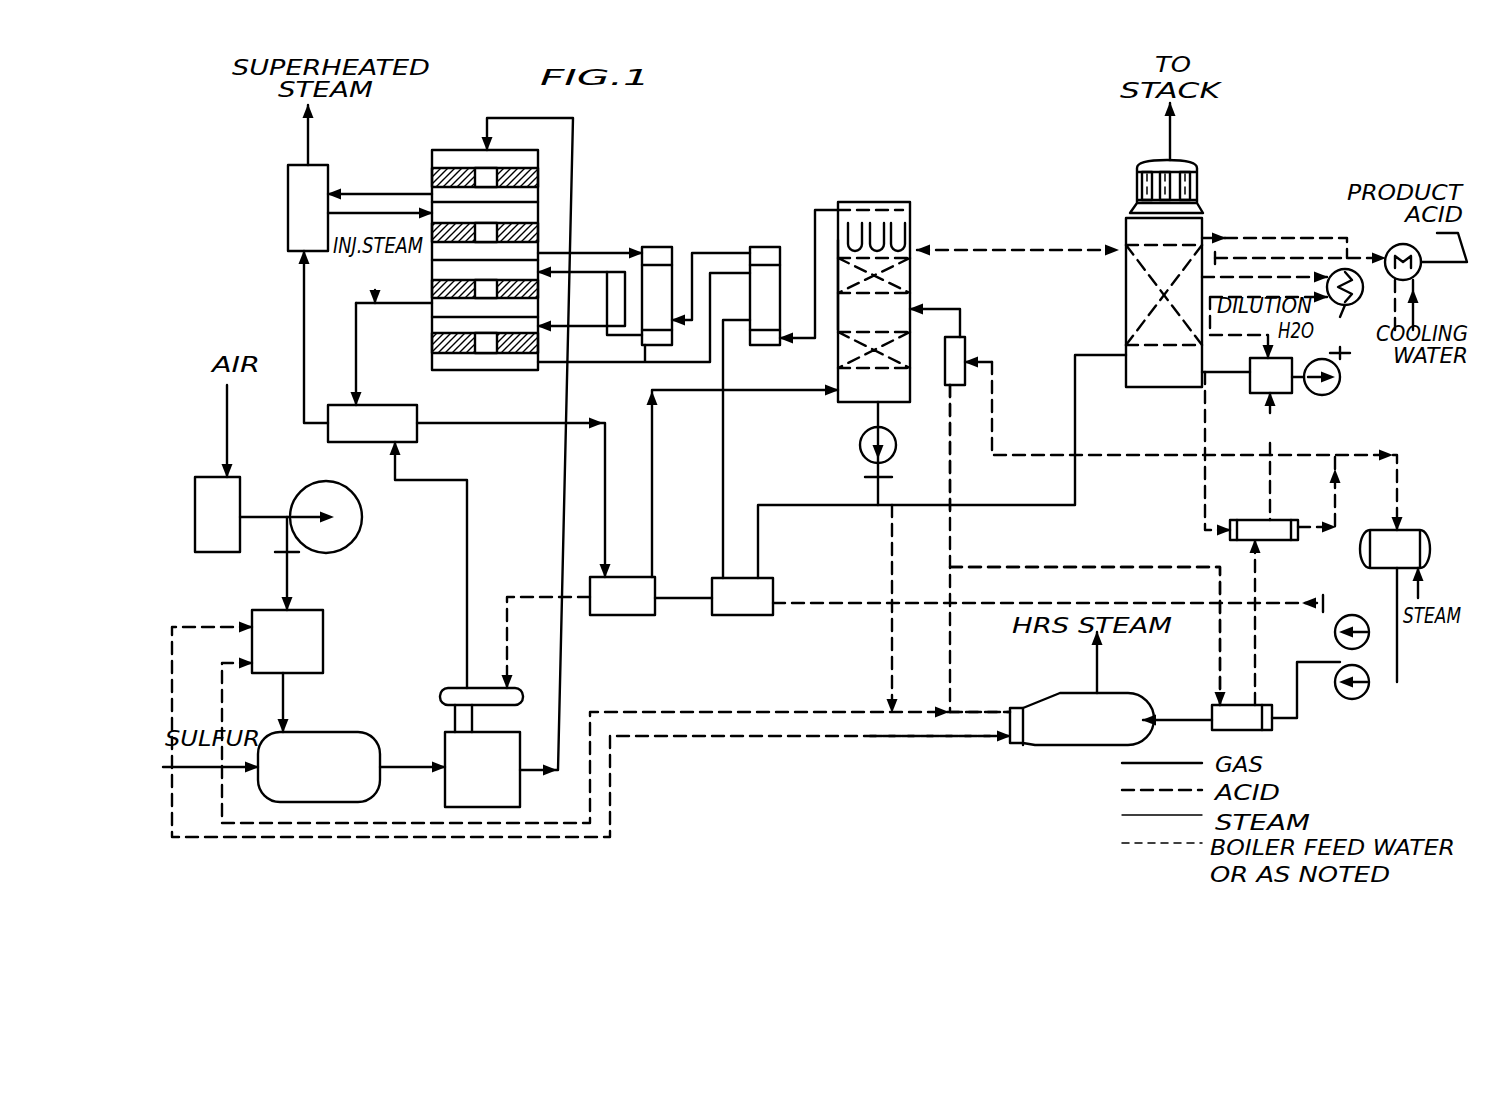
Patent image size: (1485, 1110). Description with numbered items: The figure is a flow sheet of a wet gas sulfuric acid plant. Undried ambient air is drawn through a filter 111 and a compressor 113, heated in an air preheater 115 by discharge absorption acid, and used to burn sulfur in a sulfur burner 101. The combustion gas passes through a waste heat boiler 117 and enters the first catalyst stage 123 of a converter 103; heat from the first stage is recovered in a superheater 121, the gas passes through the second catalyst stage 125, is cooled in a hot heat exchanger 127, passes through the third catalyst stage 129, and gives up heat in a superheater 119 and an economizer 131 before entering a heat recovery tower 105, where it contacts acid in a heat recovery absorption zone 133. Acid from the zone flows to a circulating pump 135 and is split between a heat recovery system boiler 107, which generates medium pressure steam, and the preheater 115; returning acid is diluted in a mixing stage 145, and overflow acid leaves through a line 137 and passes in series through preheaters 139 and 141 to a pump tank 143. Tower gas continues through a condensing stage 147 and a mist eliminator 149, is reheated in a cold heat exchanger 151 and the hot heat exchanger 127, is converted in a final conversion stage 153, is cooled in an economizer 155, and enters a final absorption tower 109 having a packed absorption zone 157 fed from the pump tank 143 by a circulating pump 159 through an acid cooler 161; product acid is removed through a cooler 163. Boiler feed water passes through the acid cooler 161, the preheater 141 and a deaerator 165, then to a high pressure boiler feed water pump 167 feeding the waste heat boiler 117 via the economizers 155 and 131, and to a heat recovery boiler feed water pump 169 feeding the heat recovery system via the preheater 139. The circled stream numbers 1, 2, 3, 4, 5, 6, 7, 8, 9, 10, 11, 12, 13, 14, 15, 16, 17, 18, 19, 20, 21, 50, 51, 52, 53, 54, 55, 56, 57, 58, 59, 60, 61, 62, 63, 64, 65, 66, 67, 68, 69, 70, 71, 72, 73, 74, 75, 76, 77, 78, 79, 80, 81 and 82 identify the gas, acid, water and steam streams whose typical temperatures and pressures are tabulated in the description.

The sulfur burner 101 is at (367, 734).
The converter 103 is at (460, 132).
The heat recovery absorption tower 105 is at (910, 209).
The heat recovery system boiler 107 is at (1085, 745).
The final absorption tower 109 is at (1126, 222).
The filter 111 is at (240, 477).
The compressor 113 is at (362, 517).
The air preheater 115 is at (323, 639).
The waste heat recovery unit 117 is at (496, 807).
The superheater 119 is at (417, 440).
The superheater 121 is at (288, 200).
The first catalyst stage 123 is at (538, 188).
The second catalyst stage 125 is at (538, 243).
The hot heat exchanger 127 is at (645, 348).
The third catalyst stage 129 is at (432, 298).
The economizer 131 is at (655, 615).
The heat recovery absorption zone 133 is at (855, 368).
The circulating pump 135 is at (865, 458).
The overflow acid line 137 is at (1108, 567).
The heat exchanger 139 is at (1272, 729).
The heat exchanger 141 is at (1280, 520).
The pump tank 143 is at (1255, 393).
The mixing stage 145 is at (960, 337).
The condensing stage 147 is at (836, 290).
The mist eliminator 149 is at (903, 210).
The cold heat exchanger 151 is at (765, 347).
The final conversion stage 153 is at (432, 350).
The economizer 155 is at (773, 615).
The packed absorption zone 157 is at (1126, 315).
The circulating pump 159 is at (1338, 386).
The acid cooler 161 is at (1353, 270).
The cooler 163 is at (1416, 281).
The deaerator 165 is at (1430, 545).
The high pressure boiler feed water pump 167 is at (1368, 641).
The heat recovery boiler feed water pump 169 is at (1368, 689).
The process stream 1 is at (227, 431).
The process stream 2 is at (265, 517).
The process stream 3 is at (287, 564).
The process stream 4 is at (283, 703).
The process stream 5 is at (413, 767).
The process stream 6 is at (528, 447).
The process stream 7 is at (379, 195).
The process stream 8 is at (380, 213).
The process stream 9 is at (590, 253).
The process stream 10 is at (617, 303).
The process stream 11 is at (394, 303).
The process stream 12 is at (355, 354).
The process stream 13 is at (514, 493).
The process stream 14 is at (738, 481).
The process stream 15 is at (808, 277).
The process stream 16 is at (710, 282).
The process stream 17 is at (581, 304).
The process stream 18 is at (644, 325).
The process stream 19 is at (729, 449).
The process stream 20 is at (942, 466).
The process stream 21 is at (1170, 131).
The process stream 50 is at (211, 767).
The process stream 51 is at (1265, 277).
The process stream 52 is at (1210, 454).
The process stream 53 is at (1324, 494).
The process stream 54 is at (1183, 444).
The process stream 55 is at (1403, 624).
The process stream 56 is at (1048, 603).
The process stream 57 is at (683, 598).
The process stream 58 is at (541, 643).
The process stream 59 is at (1306, 690).
The process stream 60 is at (1177, 720).
The process stream 61 is at (1269, 326).
The process stream 62 is at (892, 609).
The process stream 63 is at (591, 730).
The process stream 64 is at (616, 741).
The process stream 65 is at (935, 735).
The process stream 66 is at (980, 713).
The process stream 67 is at (947, 551).
The process stream 68 is at (950, 447).
The process stream 69 is at (934, 316).
The process stream 70 is at (1088, 630).
The process stream 71 is at (1255, 622).
The process stream 72 is at (1270, 456).
The process stream 73 is at (1226, 372).
The process stream 74 is at (1340, 332).
The process stream 75 is at (1300, 258).
The process stream 76 is at (1274, 241).
The process stream 77 is at (1444, 255).
The steam stream 78 is at (375, 282).
The steam stream 79 is at (436, 564).
The steam stream 80 is at (308, 336).
The steam stream 81 is at (308, 134).
The steam stream 82 is at (1097, 662).